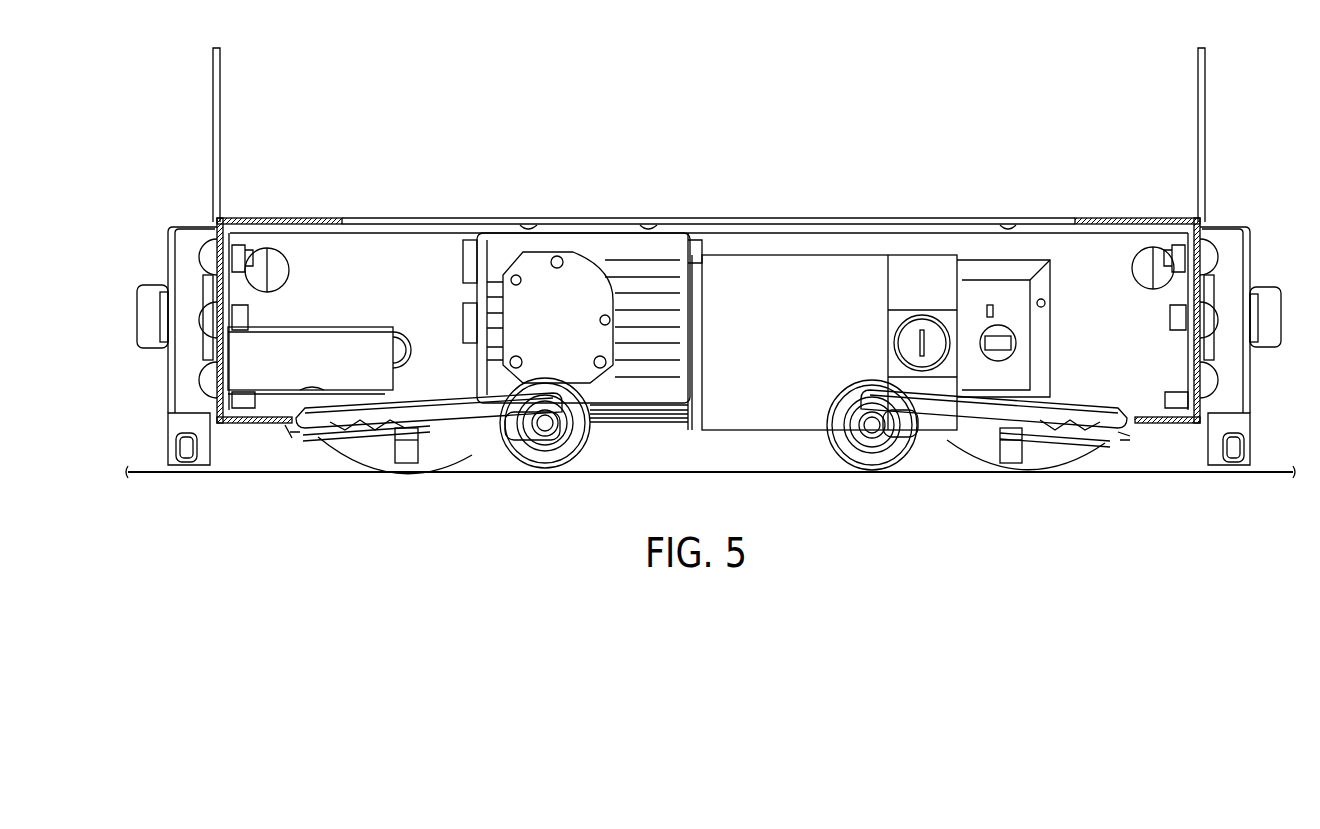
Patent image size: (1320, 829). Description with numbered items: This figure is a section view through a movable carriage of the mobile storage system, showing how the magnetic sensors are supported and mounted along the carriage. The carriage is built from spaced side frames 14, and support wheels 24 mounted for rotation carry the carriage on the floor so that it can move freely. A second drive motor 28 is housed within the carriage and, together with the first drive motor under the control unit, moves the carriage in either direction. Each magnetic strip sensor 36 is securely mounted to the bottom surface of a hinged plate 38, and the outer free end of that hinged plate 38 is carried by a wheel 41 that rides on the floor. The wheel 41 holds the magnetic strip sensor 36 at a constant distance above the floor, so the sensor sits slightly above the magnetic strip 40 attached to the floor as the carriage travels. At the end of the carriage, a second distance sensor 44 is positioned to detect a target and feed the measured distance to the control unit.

The side frame 14 is at (287, 222).
The support wheel 24 is at (1040, 455).
The second drive motor 28 is at (815, 297).
The magnetic strip sensor 36 is at (406, 449).
The hinged plate 38 is at (448, 405).
The magnetic strip 40 is at (710, 473).
The wheel 41 is at (858, 455).
The second distance sensor 44 is at (138, 318).